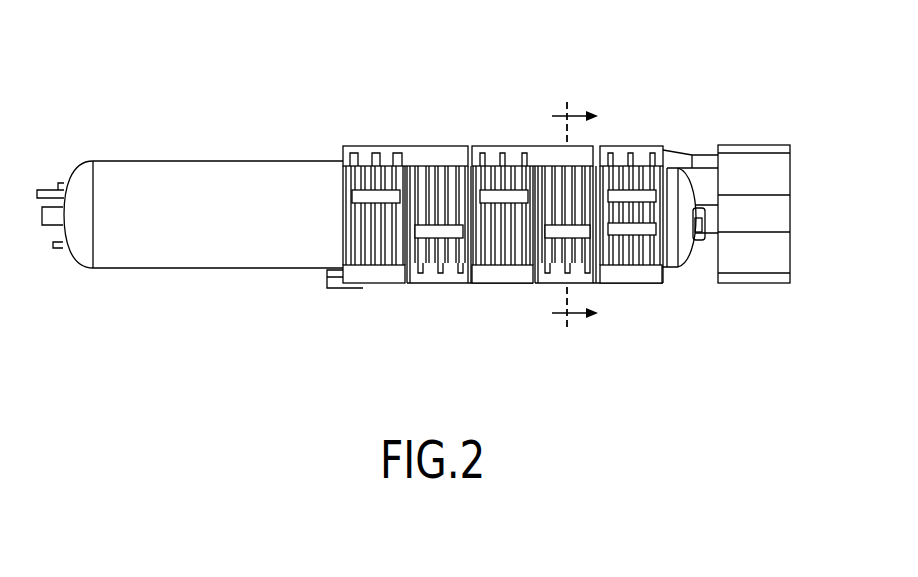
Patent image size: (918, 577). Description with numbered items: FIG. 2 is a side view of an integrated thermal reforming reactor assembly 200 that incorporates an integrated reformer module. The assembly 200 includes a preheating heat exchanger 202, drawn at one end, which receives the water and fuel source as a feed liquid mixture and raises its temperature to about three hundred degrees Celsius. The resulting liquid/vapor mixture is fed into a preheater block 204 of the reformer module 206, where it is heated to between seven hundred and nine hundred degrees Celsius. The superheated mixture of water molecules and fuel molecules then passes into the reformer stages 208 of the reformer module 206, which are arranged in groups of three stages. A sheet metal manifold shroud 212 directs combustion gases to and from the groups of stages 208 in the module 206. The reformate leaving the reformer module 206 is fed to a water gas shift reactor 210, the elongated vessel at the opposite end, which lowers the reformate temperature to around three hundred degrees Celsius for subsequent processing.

The integrated thermal reforming reactor assembly 200 is at (606, 70).
The preheating heat exchanger 202 is at (789, 195).
The preheater block 204 is at (634, 178).
The reformer module 206 is at (618, 325).
The reformer stages 208 is at (437, 185).
The water gas shift reactor 210 is at (192, 185).
The sheet metal manifold shroud 212 is at (378, 293).